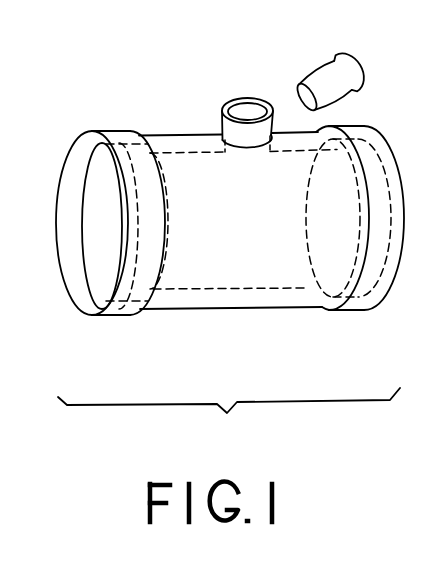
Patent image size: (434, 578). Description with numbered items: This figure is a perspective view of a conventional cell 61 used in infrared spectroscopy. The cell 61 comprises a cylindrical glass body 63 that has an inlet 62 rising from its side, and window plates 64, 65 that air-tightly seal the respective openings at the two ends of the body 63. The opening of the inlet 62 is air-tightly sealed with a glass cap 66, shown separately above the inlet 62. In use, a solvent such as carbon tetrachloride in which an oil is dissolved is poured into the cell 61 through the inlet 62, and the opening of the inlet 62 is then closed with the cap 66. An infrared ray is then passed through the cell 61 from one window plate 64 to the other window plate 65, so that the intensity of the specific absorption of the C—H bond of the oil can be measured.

The cell 61 is at (202, 180).
The inlet 62 is at (233, 98).
The cylindrical glass body 63 is at (241, 297).
The window plate 64 is at (97, 268).
The window plate 65 is at (371, 312).
The cap 66 is at (323, 80).